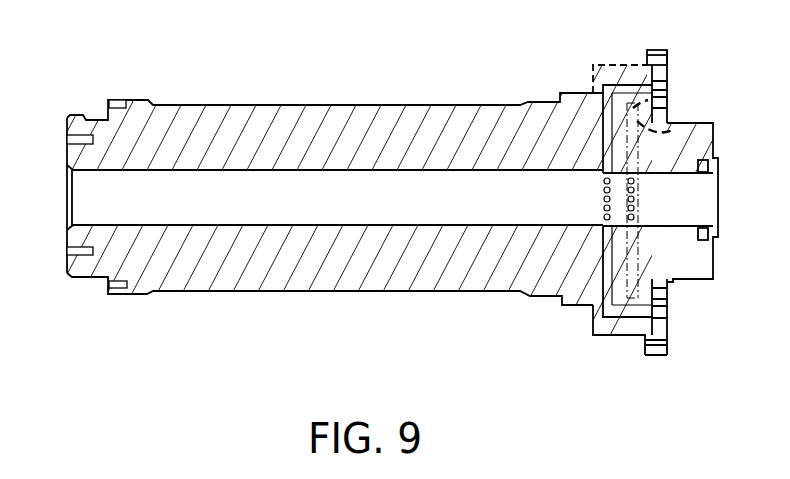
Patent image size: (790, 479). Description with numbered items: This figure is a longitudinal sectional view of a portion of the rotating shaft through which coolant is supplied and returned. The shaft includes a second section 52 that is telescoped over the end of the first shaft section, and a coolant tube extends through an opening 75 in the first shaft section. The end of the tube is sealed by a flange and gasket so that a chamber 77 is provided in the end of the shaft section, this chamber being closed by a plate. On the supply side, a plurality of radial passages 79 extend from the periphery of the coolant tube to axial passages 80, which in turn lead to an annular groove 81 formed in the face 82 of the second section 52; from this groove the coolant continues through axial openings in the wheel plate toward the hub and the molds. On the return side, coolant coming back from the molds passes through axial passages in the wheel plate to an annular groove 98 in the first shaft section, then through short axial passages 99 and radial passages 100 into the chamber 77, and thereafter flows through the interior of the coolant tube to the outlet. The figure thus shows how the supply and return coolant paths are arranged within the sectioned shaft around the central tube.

The second section 52 is at (327, 256).
The opening 75 is at (286, 172).
The chamber 77 is at (681, 210).
The radial passages 79 is at (607, 128).
The axial passages 80 is at (622, 118).
The annular groove 81 is at (672, 82).
The face 82 is at (665, 80).
The annular groove 98 is at (672, 100).
The short axial passages 99 is at (676, 93).
The radial passages 100 is at (671, 125).